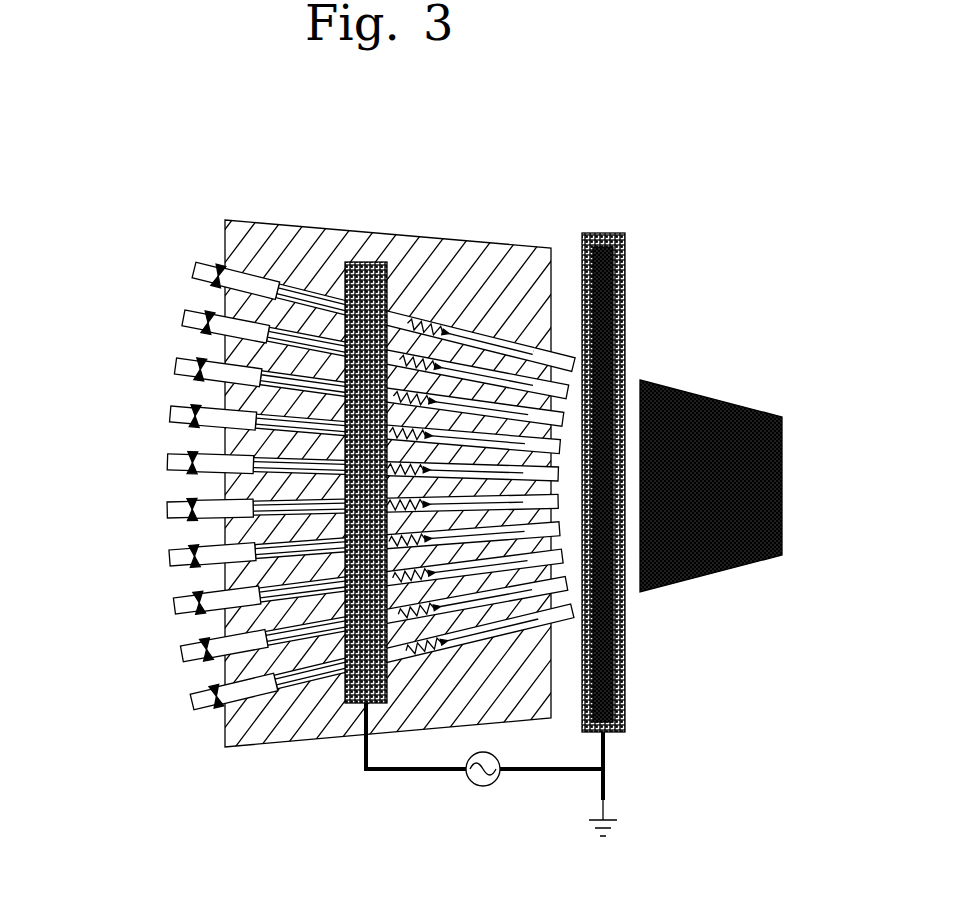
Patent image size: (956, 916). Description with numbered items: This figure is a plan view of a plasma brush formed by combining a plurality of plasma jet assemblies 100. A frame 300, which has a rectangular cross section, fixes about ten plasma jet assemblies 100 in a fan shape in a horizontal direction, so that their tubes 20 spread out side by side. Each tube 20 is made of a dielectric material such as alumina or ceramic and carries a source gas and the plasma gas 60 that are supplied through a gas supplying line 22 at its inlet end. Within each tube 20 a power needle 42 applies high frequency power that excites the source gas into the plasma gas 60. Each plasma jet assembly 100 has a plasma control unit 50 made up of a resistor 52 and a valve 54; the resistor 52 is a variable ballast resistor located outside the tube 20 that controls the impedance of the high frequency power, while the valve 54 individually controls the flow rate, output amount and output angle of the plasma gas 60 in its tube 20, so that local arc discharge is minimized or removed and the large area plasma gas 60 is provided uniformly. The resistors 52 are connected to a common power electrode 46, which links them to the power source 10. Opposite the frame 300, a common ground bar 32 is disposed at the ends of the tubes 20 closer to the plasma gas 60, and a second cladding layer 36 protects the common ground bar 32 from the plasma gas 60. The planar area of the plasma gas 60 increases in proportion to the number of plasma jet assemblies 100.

The power source 10 is at (483, 787).
The tube 20 is at (496, 640).
The gas supplying line 22 is at (198, 712).
The common ground bar 32 is at (607, 292).
The second cladding layer 36 is at (626, 683).
The power needle 42 is at (507, 345).
The common power electrode 46 is at (388, 676).
The plasma control unit 50 is at (398, 175).
The resistor 52 is at (408, 317).
The valve 54 is at (225, 262).
The plasma gas 60 is at (743, 409).
The plasma jet assembly 100 is at (162, 460).
The frame 300 is at (495, 245).